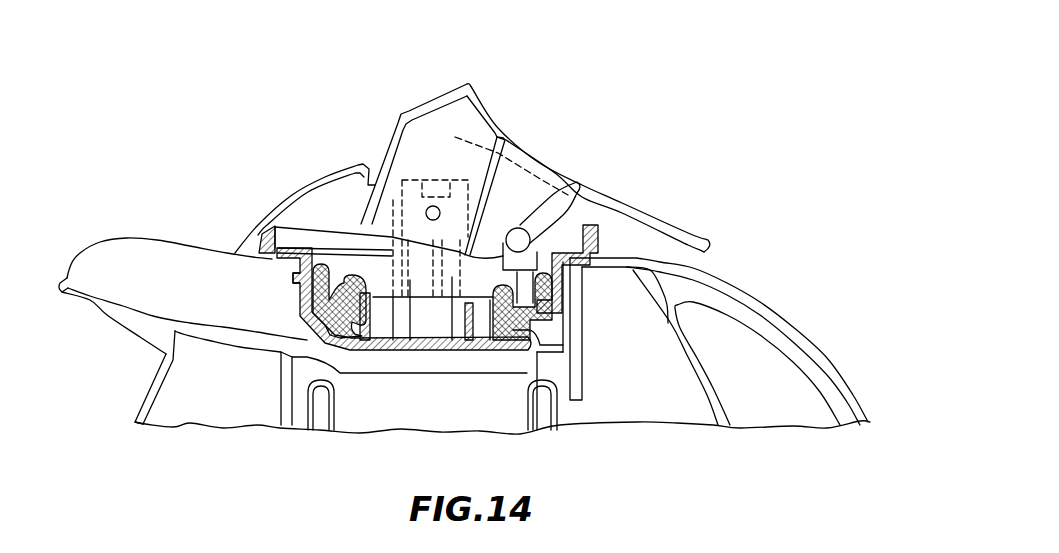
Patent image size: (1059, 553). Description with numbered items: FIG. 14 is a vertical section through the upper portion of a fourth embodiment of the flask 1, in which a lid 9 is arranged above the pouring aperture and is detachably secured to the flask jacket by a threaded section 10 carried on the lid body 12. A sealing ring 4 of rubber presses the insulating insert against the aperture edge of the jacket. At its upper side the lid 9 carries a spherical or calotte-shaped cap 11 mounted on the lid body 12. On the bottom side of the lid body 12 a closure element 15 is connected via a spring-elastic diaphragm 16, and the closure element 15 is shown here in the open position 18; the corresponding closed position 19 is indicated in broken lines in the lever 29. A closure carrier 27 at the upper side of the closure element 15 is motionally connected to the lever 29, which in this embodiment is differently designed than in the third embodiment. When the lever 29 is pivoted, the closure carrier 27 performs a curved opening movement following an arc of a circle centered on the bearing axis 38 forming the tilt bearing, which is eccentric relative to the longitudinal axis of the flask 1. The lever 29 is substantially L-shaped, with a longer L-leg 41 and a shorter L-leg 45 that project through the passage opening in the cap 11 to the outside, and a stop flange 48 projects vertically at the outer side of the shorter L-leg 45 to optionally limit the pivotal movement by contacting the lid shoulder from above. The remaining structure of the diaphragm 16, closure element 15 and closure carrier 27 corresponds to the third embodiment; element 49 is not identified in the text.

The flask 1 is at (790, 262).
The sealing ring 4 is at (317, 362).
The lid 9 is at (318, 165).
The threaded section 10 is at (282, 281).
The cap 11 is at (351, 152).
The lid body 12 is at (262, 271).
The closure element 15 is at (458, 348).
The spring-elastic diaphragm 16 is at (291, 308).
The open position 18 is at (414, 366).
The closed position 19 is at (478, 126).
The closure carrier 27 is at (390, 260).
The lever 29 is at (676, 212).
The bearing axis 38 is at (522, 237).
The longer L-leg 41 is at (540, 163).
The shorter L-leg 45 is at (392, 148).
The stop flange 48 is at (406, 117).
The roof edge 49 is at (448, 86).